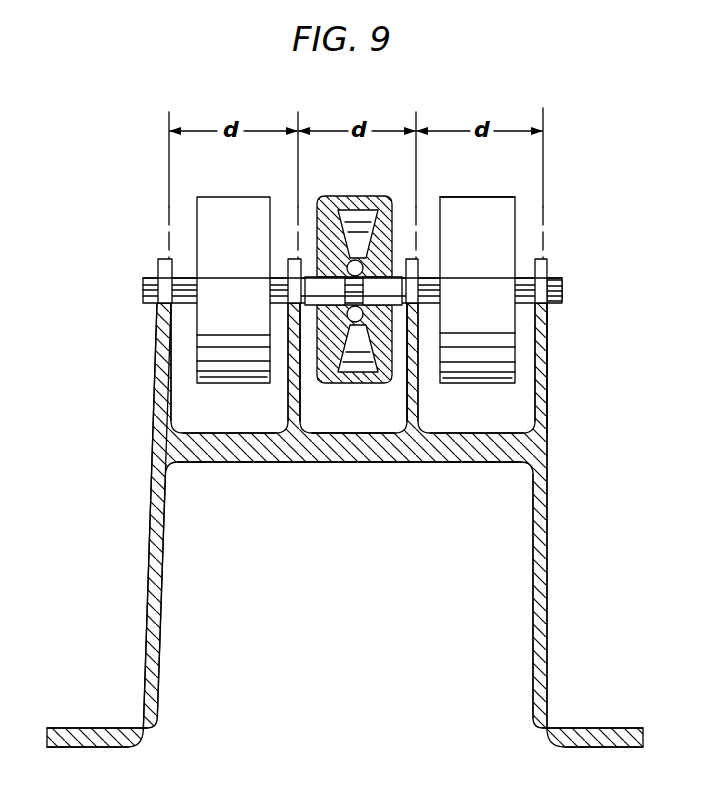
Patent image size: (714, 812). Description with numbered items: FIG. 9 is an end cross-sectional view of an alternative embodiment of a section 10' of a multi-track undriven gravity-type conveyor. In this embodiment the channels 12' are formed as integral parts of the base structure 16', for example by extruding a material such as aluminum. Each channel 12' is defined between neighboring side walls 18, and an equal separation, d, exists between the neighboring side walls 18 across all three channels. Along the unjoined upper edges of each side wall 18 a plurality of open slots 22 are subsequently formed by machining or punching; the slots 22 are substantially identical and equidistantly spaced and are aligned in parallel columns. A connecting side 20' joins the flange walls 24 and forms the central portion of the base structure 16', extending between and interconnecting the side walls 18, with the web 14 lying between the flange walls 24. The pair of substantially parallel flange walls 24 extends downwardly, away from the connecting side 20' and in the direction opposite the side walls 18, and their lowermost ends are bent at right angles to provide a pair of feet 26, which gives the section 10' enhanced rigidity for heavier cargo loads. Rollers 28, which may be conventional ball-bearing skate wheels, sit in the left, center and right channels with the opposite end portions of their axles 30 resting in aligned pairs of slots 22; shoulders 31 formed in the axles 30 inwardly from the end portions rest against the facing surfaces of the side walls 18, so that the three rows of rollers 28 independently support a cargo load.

The section 10' is at (306, 353).
The channel 12' is at (348, 294).
The web 14 is at (336, 432).
The base structure 16' is at (345, 525).
The side wall 18 is at (153, 398).
The connecting side 20' is at (350, 476).
The slot 22 is at (158, 263).
The flange wall 24 is at (162, 610).
The foot 26 is at (583, 728).
The roller 28 is at (372, 197).
The axle 30 is at (562, 290).
The shoulder 31 is at (187, 292).